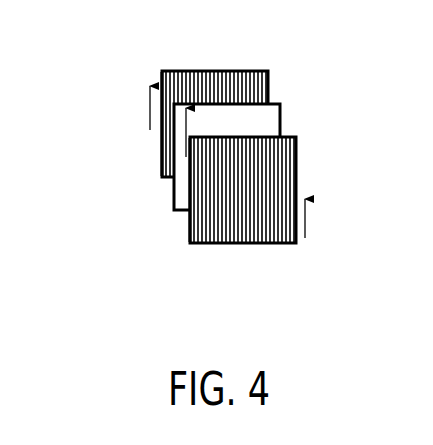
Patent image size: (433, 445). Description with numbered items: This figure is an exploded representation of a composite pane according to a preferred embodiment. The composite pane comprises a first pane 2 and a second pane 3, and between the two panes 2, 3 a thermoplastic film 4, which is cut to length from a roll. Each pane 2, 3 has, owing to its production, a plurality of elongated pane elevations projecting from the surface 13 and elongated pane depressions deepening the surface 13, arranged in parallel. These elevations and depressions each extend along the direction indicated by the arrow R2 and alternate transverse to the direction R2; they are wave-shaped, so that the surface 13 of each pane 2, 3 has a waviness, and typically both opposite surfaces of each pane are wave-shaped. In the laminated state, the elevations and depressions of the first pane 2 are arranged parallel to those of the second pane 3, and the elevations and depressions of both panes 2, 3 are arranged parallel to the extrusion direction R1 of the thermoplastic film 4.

The first pane 2 is at (276, 158).
The second pane 3 is at (259, 109).
The thermoplastic film 4 is at (262, 121).
The surface 13 is at (160, 78).
The extrusion direction R1 is at (184, 133).
The direction R2 is at (227, 162).